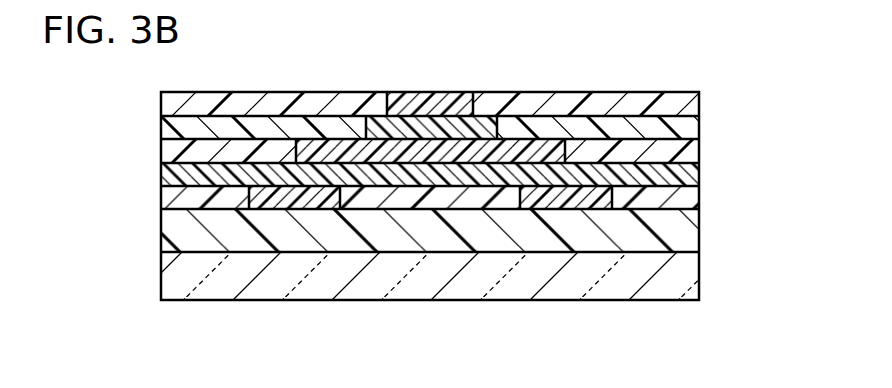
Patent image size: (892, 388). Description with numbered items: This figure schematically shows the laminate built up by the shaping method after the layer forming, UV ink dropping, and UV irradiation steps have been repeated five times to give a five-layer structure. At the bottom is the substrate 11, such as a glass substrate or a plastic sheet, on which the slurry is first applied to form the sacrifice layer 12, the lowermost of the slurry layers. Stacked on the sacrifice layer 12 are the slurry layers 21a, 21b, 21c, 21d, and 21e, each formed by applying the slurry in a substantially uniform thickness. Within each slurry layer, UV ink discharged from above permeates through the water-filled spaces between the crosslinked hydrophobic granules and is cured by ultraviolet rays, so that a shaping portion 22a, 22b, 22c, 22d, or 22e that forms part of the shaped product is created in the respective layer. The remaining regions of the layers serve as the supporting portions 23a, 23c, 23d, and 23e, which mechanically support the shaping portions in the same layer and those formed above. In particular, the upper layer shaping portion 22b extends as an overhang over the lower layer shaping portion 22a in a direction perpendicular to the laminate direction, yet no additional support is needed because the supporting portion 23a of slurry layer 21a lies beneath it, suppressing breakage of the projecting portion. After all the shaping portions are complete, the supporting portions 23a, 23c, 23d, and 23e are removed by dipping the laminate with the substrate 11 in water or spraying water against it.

The substrate 11 is at (695, 277).
The sacrifice layer 12 is at (695, 230).
The slurry layer 21a is at (431, 259).
The slurry layer 21b is at (702, 170).
The slurry layer 21c is at (431, 107).
The slurry layer 21d is at (432, 88).
The slurry layer 21e is at (432, 65).
The shaping portion 22a is at (283, 210).
The shaping portion 22b is at (497, 174).
The shaping portion 22c is at (559, 160).
The shaping portion 22d is at (488, 118).
The shaping portion 22e is at (418, 92).
The supporting portion 23a is at (160, 197).
The supporting portion 23c is at (160, 146).
The supporting portion 23d is at (160, 122).
The supporting portion 23e is at (160, 100).